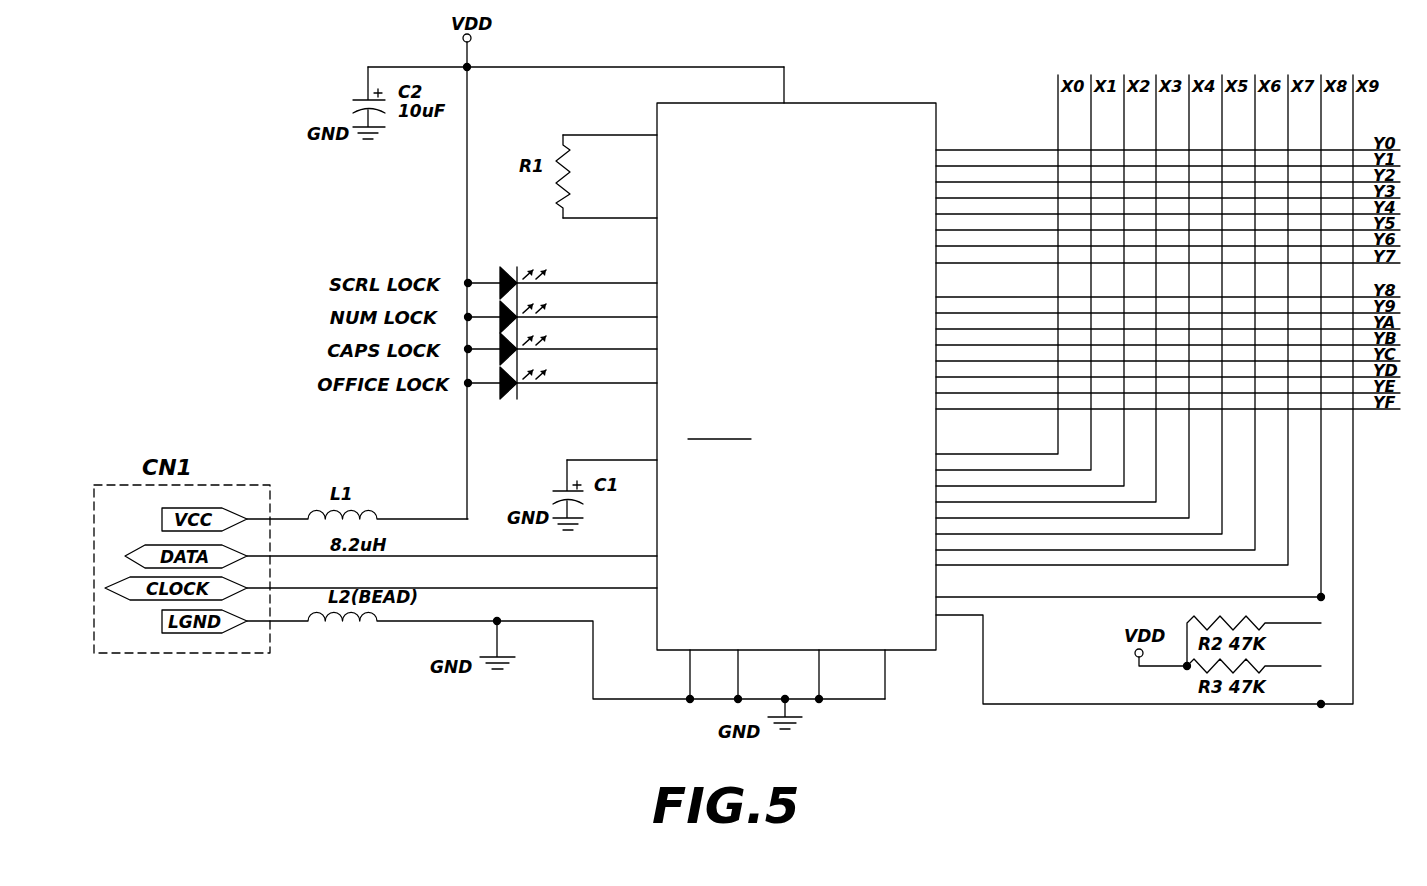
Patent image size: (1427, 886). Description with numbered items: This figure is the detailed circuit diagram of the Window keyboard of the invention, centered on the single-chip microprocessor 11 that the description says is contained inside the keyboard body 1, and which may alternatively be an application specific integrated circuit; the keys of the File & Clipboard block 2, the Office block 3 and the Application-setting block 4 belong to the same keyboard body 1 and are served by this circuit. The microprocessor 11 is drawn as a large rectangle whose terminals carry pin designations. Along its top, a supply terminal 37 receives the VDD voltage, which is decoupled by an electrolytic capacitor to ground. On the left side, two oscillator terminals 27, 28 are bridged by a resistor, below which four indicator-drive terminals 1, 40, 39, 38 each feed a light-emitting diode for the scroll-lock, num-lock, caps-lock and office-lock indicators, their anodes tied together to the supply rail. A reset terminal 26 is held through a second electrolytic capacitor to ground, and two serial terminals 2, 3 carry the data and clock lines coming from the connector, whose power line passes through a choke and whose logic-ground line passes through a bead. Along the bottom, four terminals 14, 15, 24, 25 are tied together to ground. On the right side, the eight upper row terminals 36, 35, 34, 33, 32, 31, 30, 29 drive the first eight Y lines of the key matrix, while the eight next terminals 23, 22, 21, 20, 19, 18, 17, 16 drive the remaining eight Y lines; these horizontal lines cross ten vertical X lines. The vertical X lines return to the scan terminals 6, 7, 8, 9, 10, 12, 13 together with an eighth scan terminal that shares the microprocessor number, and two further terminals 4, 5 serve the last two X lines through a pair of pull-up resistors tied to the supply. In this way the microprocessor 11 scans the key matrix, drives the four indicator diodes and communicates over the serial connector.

The single-chip microprocessor 11 is at (900, 108).
The VDD pin 37 is at (798, 85).
The Xin pin 27 is at (610, 135).
The Xout pin 28 is at (610, 218).
The keyboard body 1 is at (587, 283).
The P3.1 pin (NUM LOCK LED) 40 is at (587, 317).
The P3.2 pin (CAPS LOCK LED) 39 is at (587, 349).
The P3.3/CLO pin (OFFICE LOCK LED) 38 is at (587, 383).
The RESET pin 26 is at (612, 450).
The File & Clipboard block 2 is at (452, 556).
The Office block 3 is at (452, 587).
The NC pin 14 is at (702, 674).
The VSS1 pin 15 is at (750, 674).
The VSS2 pin 24 is at (831, 674).
The EA pin 25 is at (897, 674).
The P0.0 pin (Y0) 36 is at (1168, 143).
The P0.1 pin (Y1) 35 is at (1168, 159).
The P0.2 pin (Y2) 34 is at (1168, 175).
The P0.3 pin (Y3) 33 is at (1168, 191).
The P0.4 pin (Y4) 32 is at (1168, 207).
The P0.5 pin (Y5) 31 is at (1168, 223).
The P0.6 pin (Y6) 30 is at (1168, 239).
The P0.7 pin (Y7) 29 is at (1168, 255).
The P1.0 pin (Y8) 23 is at (1168, 290).
The P1.1 pin (Y9) 22 is at (1168, 306).
The P1.2 pin (YA) 21 is at (1168, 322).
The P1.3 pin (YB) 20 is at (1168, 338).
The P1.4 pin (YC) 19 is at (1168, 354).
The P1.5 pin (YD) 18 is at (1168, 370).
The P1.6 pin (YE) 17 is at (1168, 386).
The P1.7 pin (YF) 16 is at (1168, 402).
The P2.0 pin (X0) 6 is at (997, 265).
The P2.1 pin (X1) 7 is at (1013, 273).
The P2.2 pin (X2) 8 is at (1030, 281).
The P2.3 pin (X3) 9 is at (1046, 289).
The P2.4 pin (X4) 10 is at (1062, 297).
The P2.6 pin (X6) 12 is at (1095, 313).
The P2.7 pin (X7) 13 is at (1112, 321).
The Application-setting block 4 is at (1130, 338).
The P4.3 pin (X9) 5 is at (1144, 391).